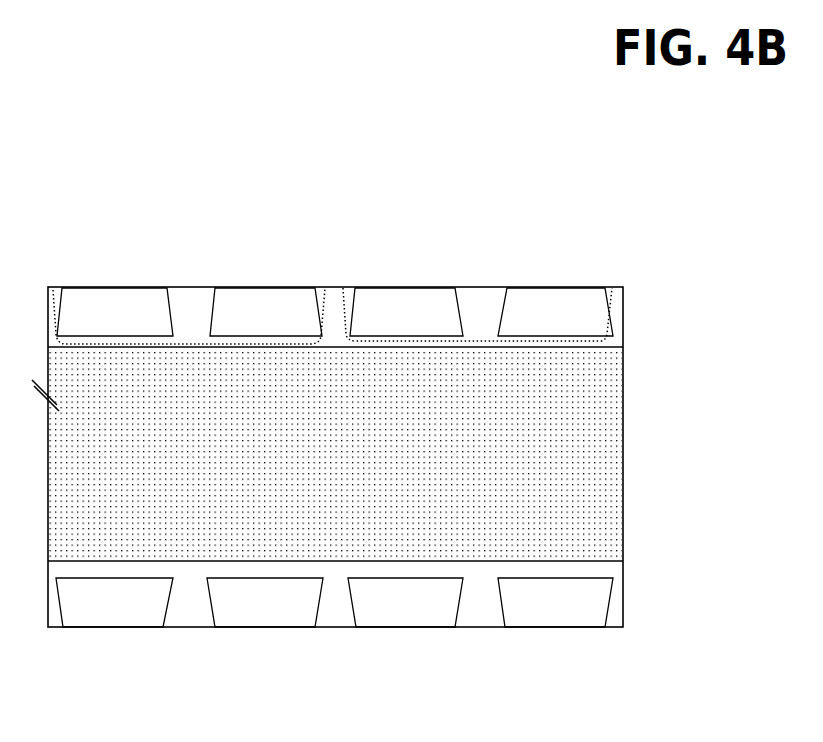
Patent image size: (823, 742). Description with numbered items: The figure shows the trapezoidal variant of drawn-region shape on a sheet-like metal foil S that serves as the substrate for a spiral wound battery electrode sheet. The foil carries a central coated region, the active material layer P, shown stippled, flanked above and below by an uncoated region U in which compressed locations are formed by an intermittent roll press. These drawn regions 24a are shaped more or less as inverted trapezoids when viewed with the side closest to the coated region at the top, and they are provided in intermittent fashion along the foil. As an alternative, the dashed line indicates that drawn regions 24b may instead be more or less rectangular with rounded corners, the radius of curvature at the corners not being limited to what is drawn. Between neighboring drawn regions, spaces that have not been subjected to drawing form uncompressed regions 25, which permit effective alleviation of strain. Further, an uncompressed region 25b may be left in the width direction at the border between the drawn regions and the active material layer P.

The uncompressed regions 25 is at (180, 298).
The drawn regions 24a is at (405, 295).
The drawn regions 24b is at (351, 287).
The uncompressed region 25b is at (565, 345).
The uncoated region U is at (622, 318).
The active material layer P is at (608, 473).
The sheet-like metal foil S is at (619, 665).